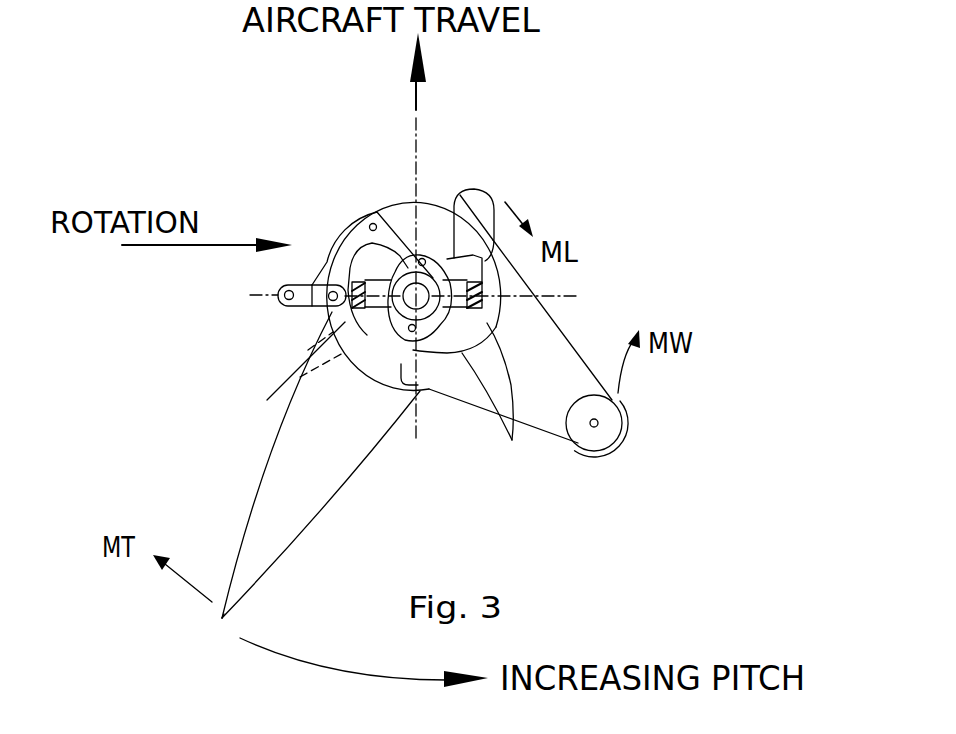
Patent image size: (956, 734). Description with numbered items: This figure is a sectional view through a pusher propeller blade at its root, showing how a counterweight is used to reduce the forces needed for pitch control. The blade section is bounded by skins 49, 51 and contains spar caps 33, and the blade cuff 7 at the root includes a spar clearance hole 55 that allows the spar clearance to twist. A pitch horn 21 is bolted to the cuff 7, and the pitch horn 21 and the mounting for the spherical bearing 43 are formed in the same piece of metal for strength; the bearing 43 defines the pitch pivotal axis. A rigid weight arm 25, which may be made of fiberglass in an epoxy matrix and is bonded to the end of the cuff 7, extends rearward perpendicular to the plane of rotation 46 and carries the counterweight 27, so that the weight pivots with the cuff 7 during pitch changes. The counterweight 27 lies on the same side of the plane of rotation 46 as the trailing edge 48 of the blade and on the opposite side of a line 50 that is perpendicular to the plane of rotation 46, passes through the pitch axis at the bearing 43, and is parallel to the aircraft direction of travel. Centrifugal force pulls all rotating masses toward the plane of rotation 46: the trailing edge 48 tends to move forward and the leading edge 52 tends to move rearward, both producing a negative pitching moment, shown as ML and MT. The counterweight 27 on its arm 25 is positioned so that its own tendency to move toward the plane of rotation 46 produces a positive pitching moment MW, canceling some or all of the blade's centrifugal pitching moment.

The blade cuff 7 is at (398, 200).
The pitch horn 21 is at (283, 292).
The weight arm 25 is at (558, 328).
The counterweight 27 is at (600, 453).
The spar caps 33 is at (500, 403).
The spherical bearing 43 is at (340, 333).
The plane of rotation 46 is at (563, 292).
The trailing edge 48 is at (222, 618).
The skin 49 is at (266, 490).
The line perpendicular to the plane of rotation 50 is at (413, 148).
The skin 51 is at (385, 437).
The leading edge 52 is at (494, 200).
The spar clearance hole 55 is at (470, 188).